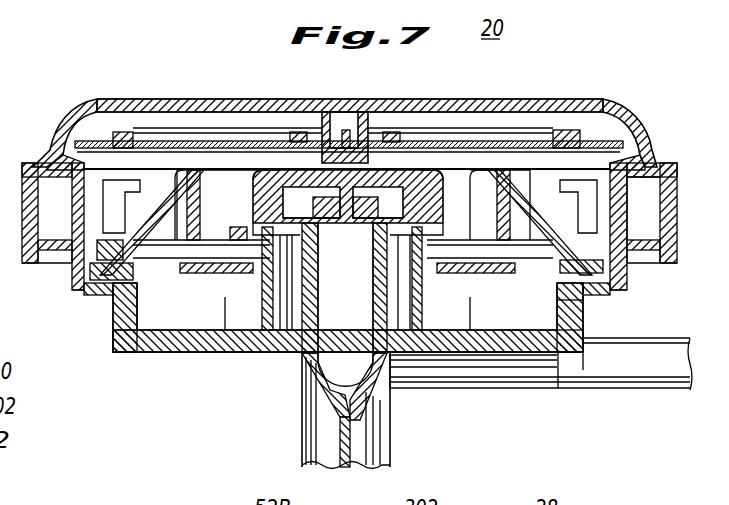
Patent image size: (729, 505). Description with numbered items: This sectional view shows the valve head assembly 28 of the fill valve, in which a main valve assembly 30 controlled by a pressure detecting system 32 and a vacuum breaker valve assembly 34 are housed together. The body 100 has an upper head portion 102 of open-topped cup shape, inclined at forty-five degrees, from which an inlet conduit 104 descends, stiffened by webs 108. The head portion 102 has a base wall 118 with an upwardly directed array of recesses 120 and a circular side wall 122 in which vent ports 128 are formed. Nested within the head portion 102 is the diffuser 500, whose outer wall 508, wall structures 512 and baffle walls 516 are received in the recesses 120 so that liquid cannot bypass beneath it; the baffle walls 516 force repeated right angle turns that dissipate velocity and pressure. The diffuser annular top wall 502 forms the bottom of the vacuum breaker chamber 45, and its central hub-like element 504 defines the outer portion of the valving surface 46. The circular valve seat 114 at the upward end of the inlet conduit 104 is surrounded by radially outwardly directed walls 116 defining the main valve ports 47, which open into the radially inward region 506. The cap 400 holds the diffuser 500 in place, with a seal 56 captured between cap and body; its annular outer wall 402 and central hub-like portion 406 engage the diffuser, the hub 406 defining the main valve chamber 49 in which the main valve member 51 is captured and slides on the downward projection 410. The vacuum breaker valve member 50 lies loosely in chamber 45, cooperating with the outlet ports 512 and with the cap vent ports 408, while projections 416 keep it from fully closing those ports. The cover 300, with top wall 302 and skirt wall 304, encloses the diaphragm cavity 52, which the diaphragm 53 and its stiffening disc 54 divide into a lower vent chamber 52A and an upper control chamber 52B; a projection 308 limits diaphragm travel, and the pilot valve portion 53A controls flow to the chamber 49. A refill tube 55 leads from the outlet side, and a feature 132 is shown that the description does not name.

The valve head assembly 28 is at (530, 145).
The main valve assembly 30 is at (440, 166).
The pressure detecting system 32 is at (240, 98).
The vacuum breaker valve assembly 34 is at (86, 290).
The vacuum breaker chamber 45 is at (545, 190).
The valving surface 46 is at (258, 124).
The main valve ports 47 is at (378, 249).
The main valve chamber 49 is at (392, 165).
The vacuum breaker valve member 50 is at (212, 338).
The main valve member 51 is at (470, 164).
The diaphragm cavity 52 is at (105, 158).
The lower vent chamber 52A is at (165, 154).
The upper control chamber 52B is at (178, 125).
The diaphragm 53 is at (596, 146).
The pilot valve portion 53A is at (345, 148).
The stiffening disc 54 is at (560, 140).
The refill tube 55 is at (638, 388).
The seal 56 is at (625, 281).
The body 100 is at (146, 354).
The upper head portion 102 is at (580, 353).
The inlet conduit 104 is at (322, 449).
The webs 108 is at (357, 451).
The valve seat 114 is at (296, 165).
The radially outwardly directed walls 116 is at (380, 296).
The base wall 118 is at (517, 352).
The recesses 120 is at (280, 340).
The circular side wall 122 is at (586, 312).
The vent ports 128 is at (660, 182).
The bracket tab 132 is at (648, 240).
The cover 300 is at (63, 122).
The top wall 302 is at (603, 110).
The skirt wall 304 is at (662, 252).
The projection 308 is at (383, 118).
The cap 400 is at (495, 166).
The annular outer wall 402 is at (613, 216).
The central hub-like portion 406 is at (238, 160).
The vent ports 408 is at (112, 216).
The projection 410 is at (297, 222).
The downwardly extending projections 416 is at (220, 252).
The diffuser 500 is at (122, 331).
The annular top wall 502 is at (582, 300).
The central hub-like element 504 is at (215, 232).
The radially inward region 506 is at (287, 322).
The outer wall 508 is at (120, 310).
The wall structures 512 is at (225, 322).
The baffle walls 516 is at (386, 320).